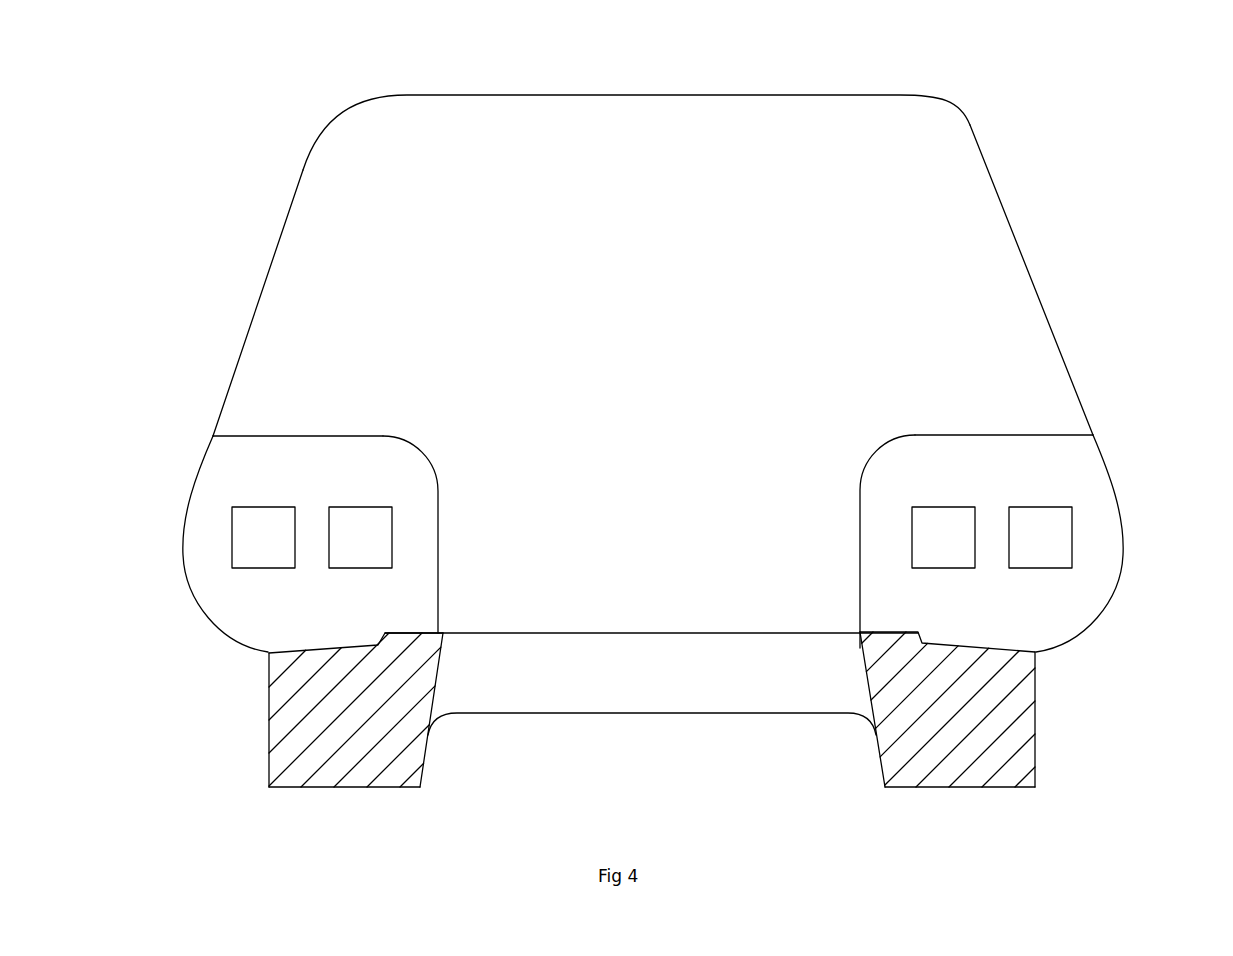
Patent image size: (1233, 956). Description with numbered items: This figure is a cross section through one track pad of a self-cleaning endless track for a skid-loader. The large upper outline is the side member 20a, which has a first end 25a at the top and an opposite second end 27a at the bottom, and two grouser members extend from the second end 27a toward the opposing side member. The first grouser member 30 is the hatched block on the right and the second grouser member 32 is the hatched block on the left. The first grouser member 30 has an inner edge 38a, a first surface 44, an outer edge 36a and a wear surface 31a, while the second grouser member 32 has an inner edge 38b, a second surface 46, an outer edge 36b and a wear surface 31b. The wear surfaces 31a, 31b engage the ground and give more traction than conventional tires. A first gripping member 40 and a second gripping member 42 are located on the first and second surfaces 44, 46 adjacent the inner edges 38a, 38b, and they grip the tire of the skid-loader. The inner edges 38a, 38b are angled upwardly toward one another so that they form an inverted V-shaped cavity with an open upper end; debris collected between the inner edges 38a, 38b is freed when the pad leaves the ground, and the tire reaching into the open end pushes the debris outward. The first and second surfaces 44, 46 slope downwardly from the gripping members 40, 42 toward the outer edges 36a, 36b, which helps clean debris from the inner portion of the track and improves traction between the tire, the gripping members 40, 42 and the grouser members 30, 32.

The side member 20a is at (867, 280).
The first end 25a is at (965, 125).
The second end 27a is at (675, 713).
The first grouser member 30 is at (1050, 744).
The wear surface 31a is at (355, 787).
The wear surface 31b is at (977, 787).
The second grouser member 32 is at (256, 747).
The outer edge 36a is at (1035, 672).
The outer edge 36b is at (270, 713).
The inner edge 38a is at (868, 688).
The inner edge 38b is at (427, 743).
The first gripping member 40 is at (870, 637).
The second gripping member 42 is at (418, 633).
The first surface 44 is at (977, 650).
The second surface 46 is at (330, 648).